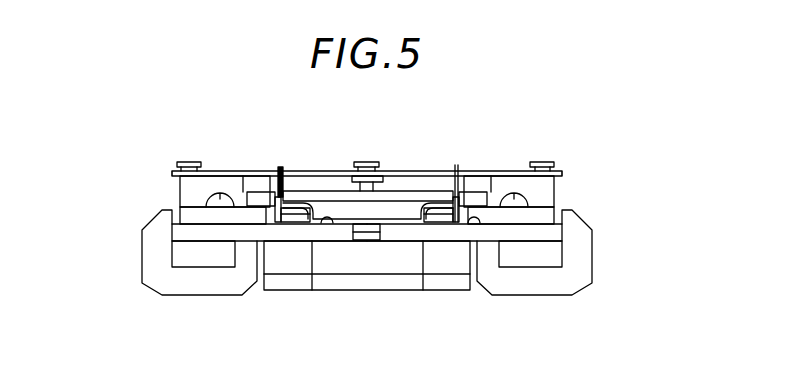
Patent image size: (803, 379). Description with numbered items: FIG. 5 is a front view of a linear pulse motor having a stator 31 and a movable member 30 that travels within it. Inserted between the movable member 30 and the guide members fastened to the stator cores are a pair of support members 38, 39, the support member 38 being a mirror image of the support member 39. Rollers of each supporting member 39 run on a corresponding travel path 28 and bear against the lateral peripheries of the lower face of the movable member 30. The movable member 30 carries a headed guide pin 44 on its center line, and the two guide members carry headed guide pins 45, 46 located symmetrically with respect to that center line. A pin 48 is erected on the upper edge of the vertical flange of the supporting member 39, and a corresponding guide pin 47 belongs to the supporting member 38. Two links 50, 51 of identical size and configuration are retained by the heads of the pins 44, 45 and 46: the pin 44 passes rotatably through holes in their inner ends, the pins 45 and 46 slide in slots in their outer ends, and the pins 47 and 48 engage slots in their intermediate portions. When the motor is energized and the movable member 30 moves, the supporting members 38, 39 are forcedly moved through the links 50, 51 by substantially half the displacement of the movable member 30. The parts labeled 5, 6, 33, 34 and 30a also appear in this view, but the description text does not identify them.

The base member 5 is at (557, 228).
The base member 6 is at (183, 230).
The travel path 28 is at (330, 223).
The movable member 30 is at (428, 193).
The flange of tray 30a is at (393, 203).
The stator 31 is at (545, 302).
The right housing 33 is at (591, 263).
The left housing 34 is at (142, 272).
The support member 38 is at (448, 217).
The support member 39 is at (287, 218).
The guide pin 44 is at (363, 162).
The guide pin 45 is at (541, 162).
The guide pin 46 is at (190, 161).
The guide pin 47 is at (458, 163).
The pin 48 is at (281, 166).
The link 50 is at (502, 172).
The link 51 is at (253, 171).